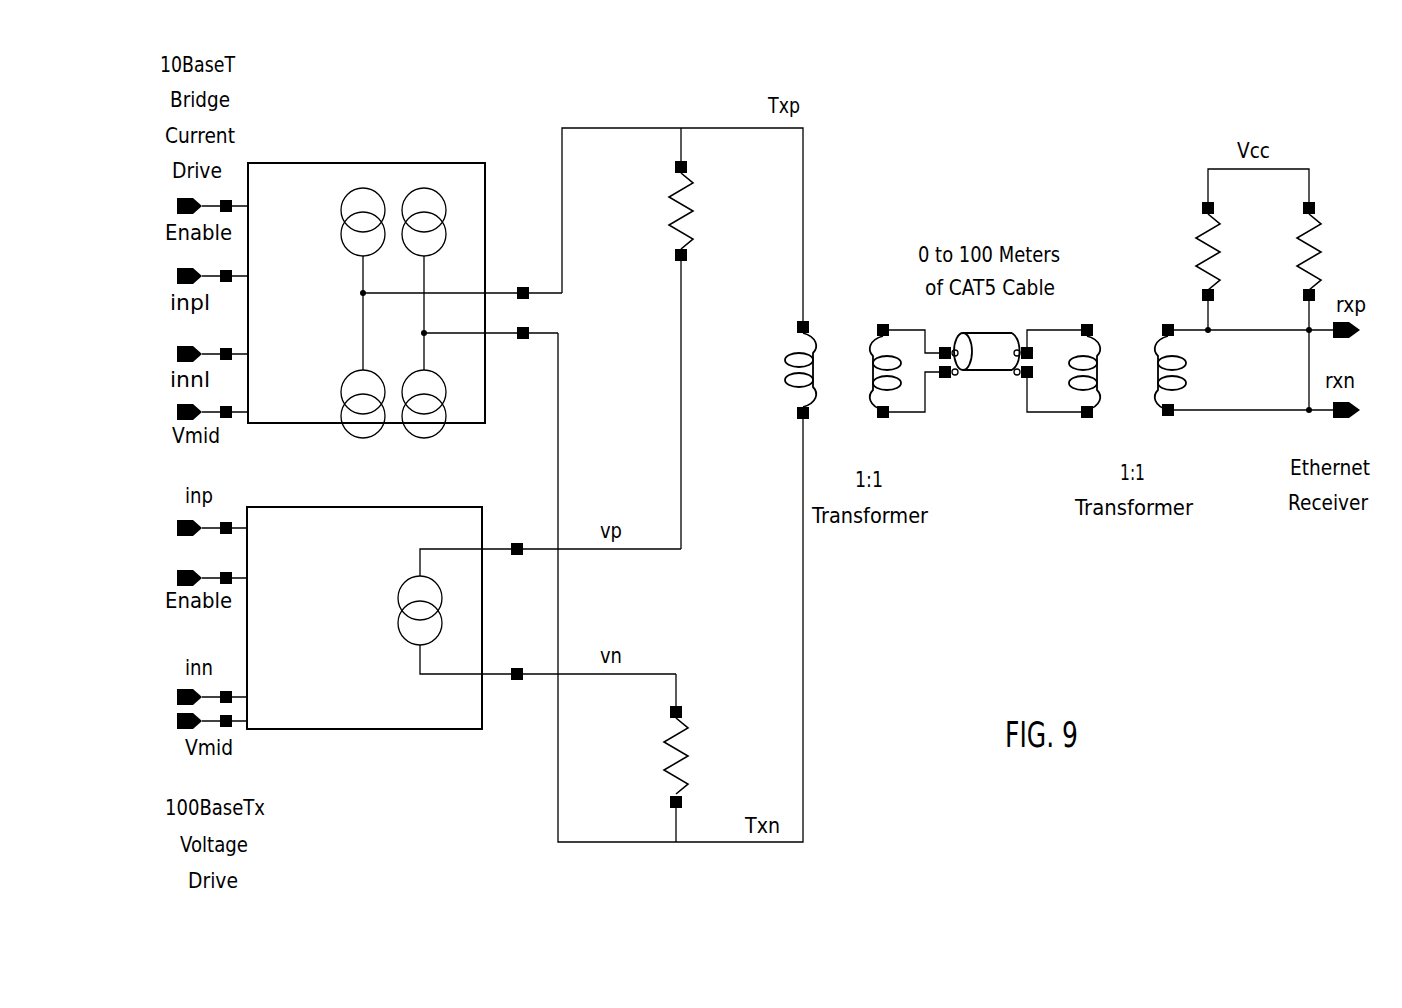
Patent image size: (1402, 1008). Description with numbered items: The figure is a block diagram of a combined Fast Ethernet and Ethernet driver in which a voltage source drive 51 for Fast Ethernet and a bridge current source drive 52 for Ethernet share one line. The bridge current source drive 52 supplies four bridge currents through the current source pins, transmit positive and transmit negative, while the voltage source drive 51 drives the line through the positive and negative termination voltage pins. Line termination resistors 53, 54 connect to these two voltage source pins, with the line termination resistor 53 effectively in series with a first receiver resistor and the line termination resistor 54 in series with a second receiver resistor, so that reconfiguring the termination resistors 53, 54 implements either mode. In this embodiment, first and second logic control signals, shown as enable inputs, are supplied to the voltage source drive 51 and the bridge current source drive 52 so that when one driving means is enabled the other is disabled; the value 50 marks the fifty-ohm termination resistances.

The 50 ohm termination resistor 50 is at (992, 446).
The voltage source drive 51 is at (383, 716).
The bridge current source drive 52 is at (393, 178).
The line termination resistor 53 is at (700, 200).
The line termination resistor 54 is at (698, 762).